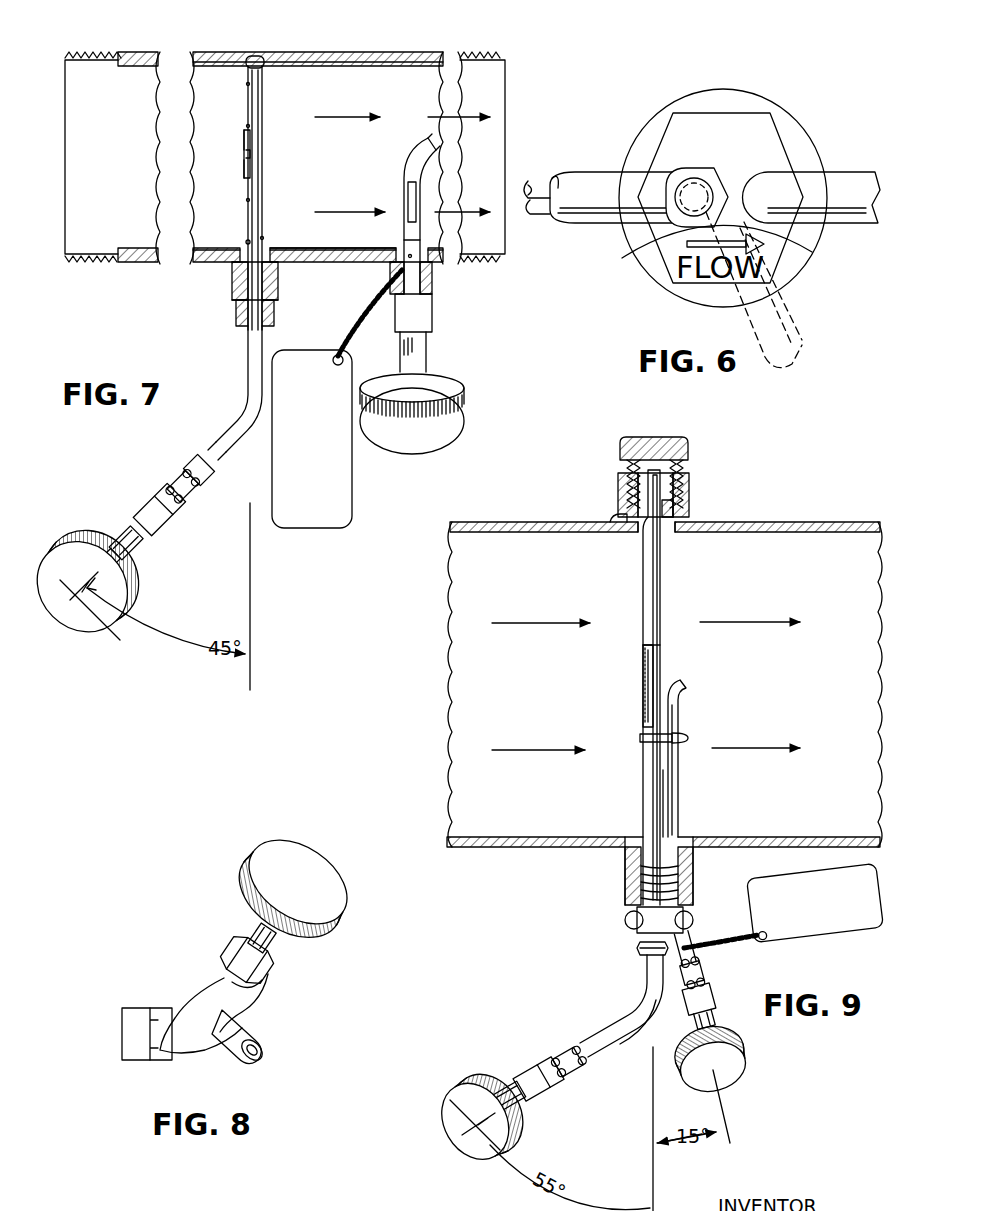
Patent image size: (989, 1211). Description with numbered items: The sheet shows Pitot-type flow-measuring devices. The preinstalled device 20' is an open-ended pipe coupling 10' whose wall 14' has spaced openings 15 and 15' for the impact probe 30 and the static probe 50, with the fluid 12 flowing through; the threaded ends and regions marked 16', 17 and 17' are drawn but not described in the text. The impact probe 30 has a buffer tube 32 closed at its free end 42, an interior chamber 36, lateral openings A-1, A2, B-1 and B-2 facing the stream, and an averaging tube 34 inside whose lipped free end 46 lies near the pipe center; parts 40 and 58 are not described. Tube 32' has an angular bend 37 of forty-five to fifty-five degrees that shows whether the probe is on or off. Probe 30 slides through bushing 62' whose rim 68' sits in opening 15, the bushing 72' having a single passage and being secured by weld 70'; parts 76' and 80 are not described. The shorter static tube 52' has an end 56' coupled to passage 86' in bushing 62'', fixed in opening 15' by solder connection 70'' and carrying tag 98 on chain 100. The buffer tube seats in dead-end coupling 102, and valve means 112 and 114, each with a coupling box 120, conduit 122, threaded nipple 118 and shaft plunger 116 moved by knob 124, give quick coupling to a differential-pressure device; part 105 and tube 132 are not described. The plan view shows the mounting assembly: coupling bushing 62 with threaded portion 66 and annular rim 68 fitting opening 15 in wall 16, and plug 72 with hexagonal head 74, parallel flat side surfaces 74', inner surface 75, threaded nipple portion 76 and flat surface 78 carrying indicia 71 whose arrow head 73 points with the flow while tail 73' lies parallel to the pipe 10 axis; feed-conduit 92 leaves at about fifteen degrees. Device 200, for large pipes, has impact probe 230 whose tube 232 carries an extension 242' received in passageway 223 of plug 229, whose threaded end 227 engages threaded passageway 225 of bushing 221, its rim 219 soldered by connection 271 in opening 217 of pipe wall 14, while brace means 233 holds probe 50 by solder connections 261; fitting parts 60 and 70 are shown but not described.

In FIG. 9, the pipe 10 is at (665, 662).
In FIG. 7, the pipe coupling 10' is at (292, 143).
In FIG. 7, the fluid 12 is at (165, 118).
In FIG. 9, the fluid 12 is at (528, 668).
In FIG. 9, the pipe wall 14 is at (663, 860).
In FIG. 7, the wall of coupling 14' is at (318, 137).
In FIG. 7, the opening 15 is at (224, 233).
In FIG. 9, the opening 15 is at (620, 822).
In FIG. 7, the opening 15' is at (393, 241).
In FIG. 9, the wall 16 is at (665, 541).
In FIG. 7, the pipe wall 16' is at (306, 143).
In FIG. 7, the pipe threads 17 is at (83, 144).
In FIG. 7, the pipe threads 17' is at (489, 142).
In FIG. 7, the preinstalled flow-measuring device 20' is at (156, 165).
In FIG. 7, the impact probe 30 is at (266, 112).
In FIG. 6, the impact probe 30 is at (572, 158).
In FIG. 7, the buffer tube 32 is at (279, 200).
In FIG. 7, the tube 32' is at (194, 439).
In FIG. 6, the tube 32' is at (625, 179).
In FIG. 7, the interpolating or averaging tube 34 is at (246, 180).
In FIG. 6, the interpolating or averaging tube 34 is at (555, 215).
In FIG. 9, the interpolating or averaging tube 34 is at (647, 707).
In FIG. 7, the interior chamber 36 is at (246, 152).
In FIG. 7, the angular bend 37 is at (250, 408).
In FIG. 7, the sensing element 40 is at (258, 160).
In FIG. 9, the sensing element 40 is at (648, 680).
In FIG. 7, the free end 42 is at (256, 64).
In FIG. 7, the lipped free end 46 is at (252, 150).
In FIG. 9, the lipped free end 46 is at (660, 668).
In FIG. 7, the static probe 50 is at (400, 190).
In FIG. 6, the static probe 50 is at (870, 228).
In FIG. 9, the static probe 50 is at (686, 720).
In FIG. 7, the tube 52' is at (431, 199).
In FIG. 7, the end 56' is at (425, 241).
In FIG. 7, the probe tip 58 is at (420, 165).
In FIG. 9, the fitting body 60 is at (688, 858).
In FIG. 6, the coupling bushing 62 is at (606, 251).
In FIG. 9, the coupling bushing 62 is at (711, 882).
In FIG. 7, the bushing 62' is at (232, 281).
In FIG. 7, the bushing 62'' is at (467, 280).
In FIG. 9, the threaded portion 66 is at (688, 900).
In FIG. 9, the annular rim 68 is at (701, 824).
In FIG. 7, the rim 68' is at (333, 237).
In FIG. 9, the mounting fitting 70 is at (630, 876).
In FIG. 7, the weld 70' is at (276, 276).
In FIG. 7, the welding or solder connection 70'' is at (442, 278).
In FIG. 6, the indicia 71 is at (800, 252).
In FIG. 6, the plug 72 is at (737, 193).
In FIG. 9, the plug 72 is at (624, 923).
In FIG. 7, the bushing 72' is at (228, 325).
In FIG. 6, the arrow head 73 is at (795, 253).
In FIG. 6, the tail 73' is at (672, 266).
In FIG. 9, the hexagonal head 74 is at (660, 920).
In FIG. 6, the parallel flat side surfaces 74' is at (723, 196).
In FIG. 9, the inner surface 75 is at (672, 832).
In FIG. 9, the threaded nipple portion 76 is at (610, 876).
In FIG. 7, the lock nut 76' is at (228, 309).
In FIG. 6, the flat surface 78 is at (712, 145).
In FIG. 6, the connector nut 80 is at (708, 176).
In FIG. 9, the connector nut 80 is at (640, 950).
In FIG. 7, the passage 86' is at (438, 317).
In FIG. 6, the feed-conduit 92 is at (848, 180).
In FIG. 9, the feed-conduit 92 is at (688, 950).
In FIG. 7, the tag 98 is at (325, 497).
In FIG. 9, the tag 98 is at (850, 915).
In FIG. 7, the chain 100 is at (326, 338).
In FIG. 9, the chain 100 is at (738, 944).
In FIG. 7, the dead-end coupling 102 is at (206, 490).
In FIG. 9, the dead-end coupling 102 is at (574, 1048).
In FIG. 7, the coupling nut 105 is at (187, 508).
In FIG. 7, the valve means 112 is at (141, 610).
In FIG. 9, the valve means 112 is at (454, 1098).
In FIG. 8, the valve means 112 is at (196, 952).
In FIG. 7, the valve means 114 is at (466, 400).
In FIG. 9, the valve means 114 is at (748, 1068).
In FIG. 8, the shaft plunger 116 is at (270, 945).
In FIG. 8, the threaded nipple 118 is at (244, 1023).
In FIG. 7, the coupling box 120 is at (158, 498).
In FIG. 9, the coupling box 120 is at (552, 1103).
In FIG. 8, the coupling box 120 is at (140, 1020).
In FIG. 7, the conduit 122 is at (130, 530).
In FIG. 9, the conduit 122 is at (514, 1086).
In FIG. 8, the conduit 122 is at (200, 1036).
In FIG. 7, the knob 124 is at (108, 604).
In FIG. 9, the knob 124 is at (462, 1124).
In FIG. 8, the knob 124 is at (372, 916).
In FIG. 9, the bent tube 132 is at (620, 1034).
In FIG. 9, the flow-measuring device 200 is at (565, 722).
In FIG. 9, the opening 217 is at (692, 518).
In FIG. 9, the annular rim 219 is at (670, 532).
In FIG. 9, the bushing 221 is at (620, 496).
In FIG. 9, the passageway 223 is at (690, 504).
In FIG. 9, the threaded passageway 225 is at (684, 488).
In FIG. 9, the threaded end 227 is at (624, 484).
In FIG. 9, the plug 229 is at (686, 452).
In FIG. 9, the impact probe 230 is at (666, 610).
In FIG. 9, the tube 232 is at (652, 576).
In FIG. 9, the brace means 233 is at (640, 739).
In FIG. 9, the extension 242' is at (592, 495).
In FIG. 9, the solder connections 261 is at (686, 740).
In FIG. 9, the solder connection 271 is at (604, 530).
In FIG. 7, the lateral opening A-1 is at (246, 84).
In FIG. 7, the lateral opening A2 is at (262, 238).
In FIG. 7, the lateral opening B-1 is at (246, 126).
In FIG. 7, the lateral opening B-2 is at (246, 204).